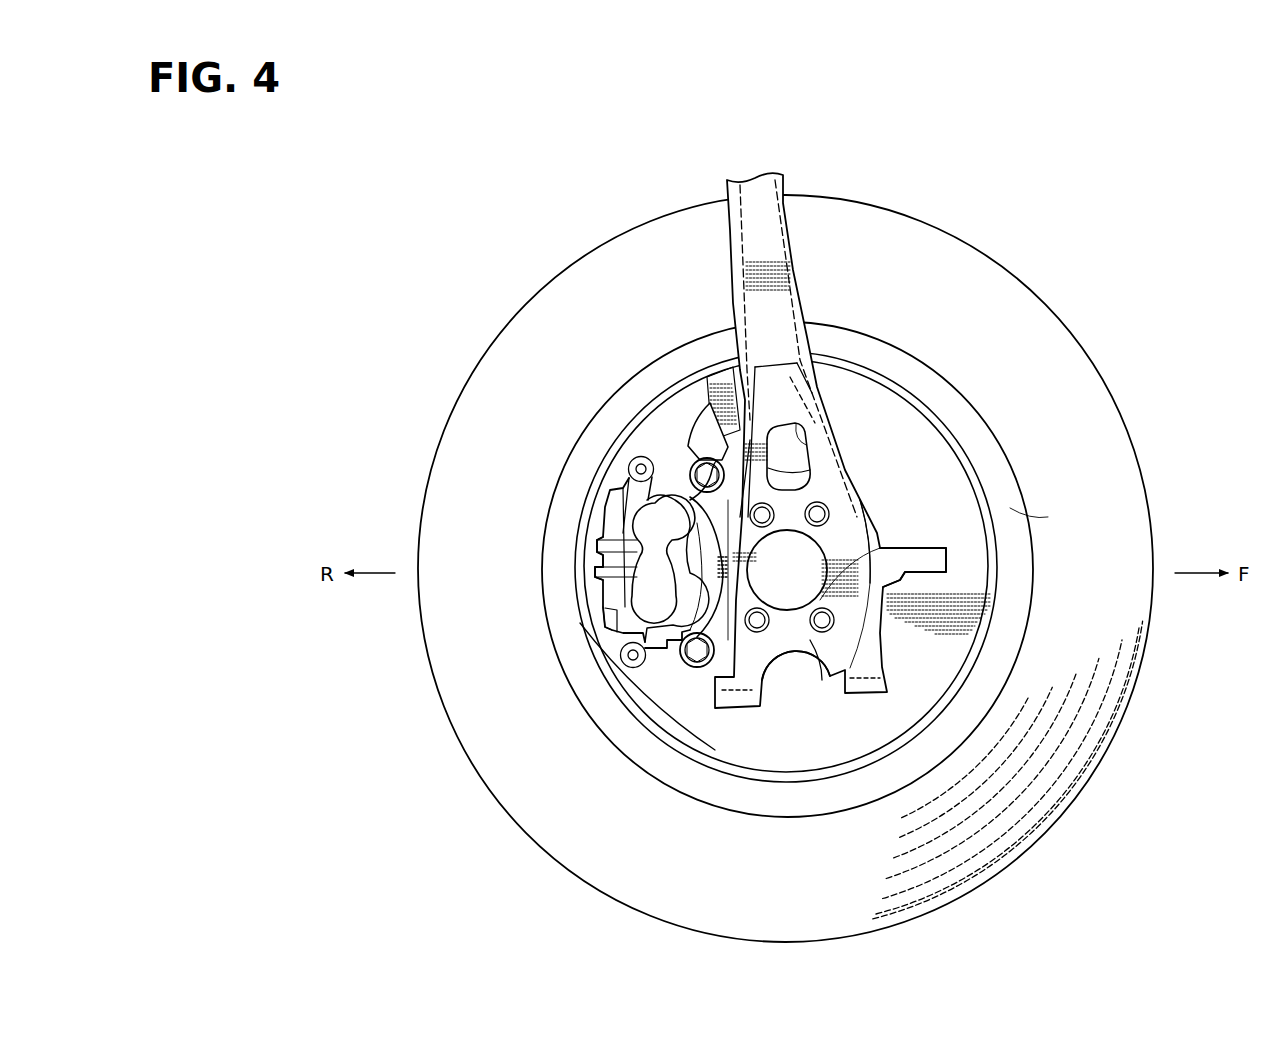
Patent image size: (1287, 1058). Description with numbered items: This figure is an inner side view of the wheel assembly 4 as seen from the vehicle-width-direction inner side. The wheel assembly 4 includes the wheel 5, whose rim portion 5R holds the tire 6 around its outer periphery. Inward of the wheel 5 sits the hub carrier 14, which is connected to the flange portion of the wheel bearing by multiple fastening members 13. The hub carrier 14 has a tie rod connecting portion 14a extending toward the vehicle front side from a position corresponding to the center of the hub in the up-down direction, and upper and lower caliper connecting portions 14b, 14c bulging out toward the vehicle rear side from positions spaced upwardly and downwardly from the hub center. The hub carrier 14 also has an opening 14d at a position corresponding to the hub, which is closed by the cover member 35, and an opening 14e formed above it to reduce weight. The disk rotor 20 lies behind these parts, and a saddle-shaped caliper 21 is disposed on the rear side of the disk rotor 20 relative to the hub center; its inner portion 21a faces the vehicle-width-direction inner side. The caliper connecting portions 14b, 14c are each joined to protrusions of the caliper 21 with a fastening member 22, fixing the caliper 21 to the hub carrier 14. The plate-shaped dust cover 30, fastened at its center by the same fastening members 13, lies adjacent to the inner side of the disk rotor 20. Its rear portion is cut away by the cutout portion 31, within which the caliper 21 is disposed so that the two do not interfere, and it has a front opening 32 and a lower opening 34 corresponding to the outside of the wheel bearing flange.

The wheel assembly 4 is at (1112, 362).
The wheel 5 is at (1022, 482).
The rim portion 5R is at (1043, 520).
The tire 6 is at (1013, 302).
The fastening members 13 is at (822, 510).
The hub carrier 14 is at (796, 268).
The tie rod connecting portion 14a is at (920, 544).
The upper caliper connecting portion 14b is at (712, 458).
The lower caliper connecting portion 14c is at (700, 690).
The opening 14d is at (788, 610).
The opening 14e is at (805, 448).
The disk rotor 20 is at (710, 403).
The caliper 21 is at (596, 571).
The inner portion 21a is at (613, 623).
The fastening member 22 is at (690, 480).
The dust cover 30 is at (963, 458).
The cutout portion 31 is at (720, 428).
The front opening 32 is at (887, 532).
The lower opening 34 is at (822, 680).
The cover member 35 is at (806, 553).